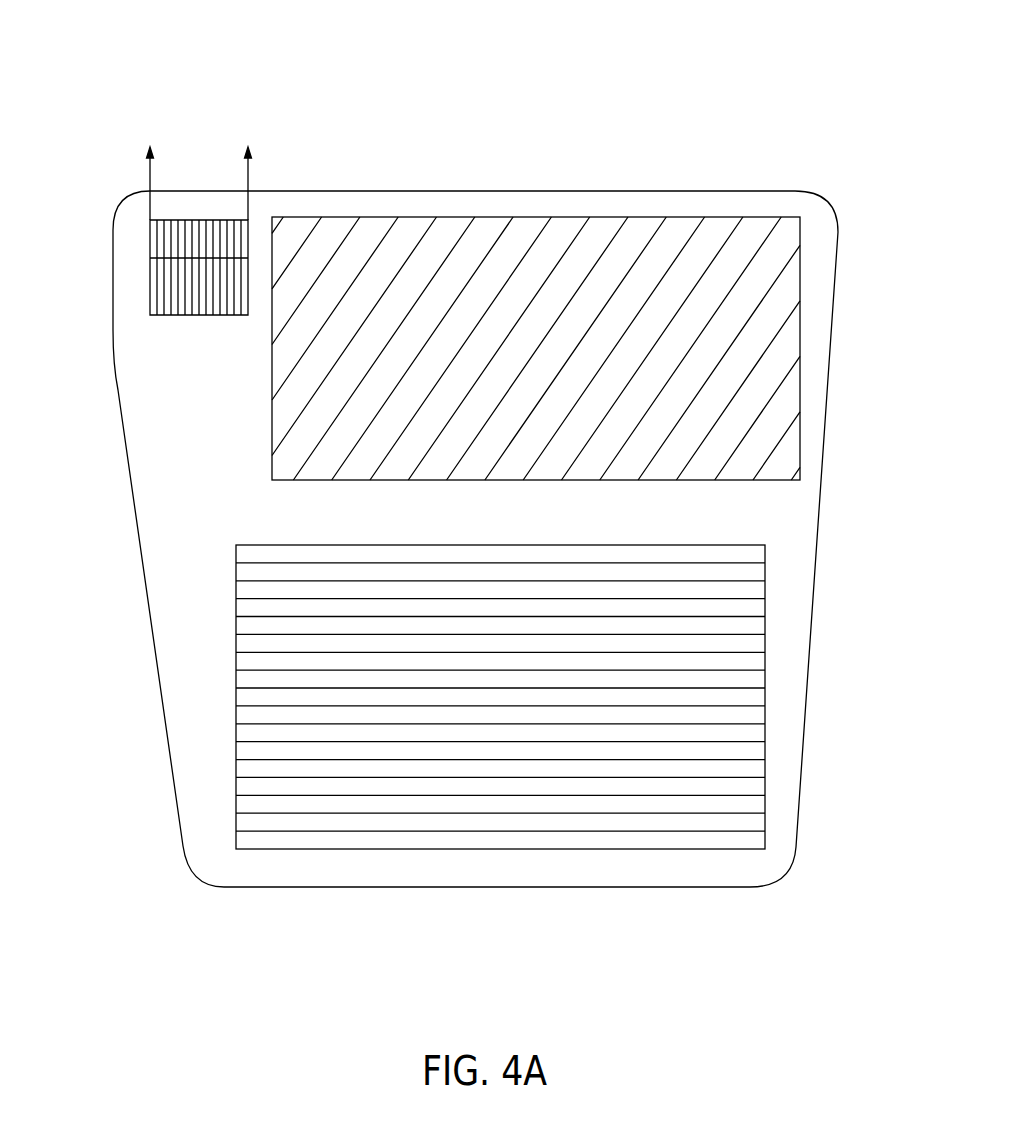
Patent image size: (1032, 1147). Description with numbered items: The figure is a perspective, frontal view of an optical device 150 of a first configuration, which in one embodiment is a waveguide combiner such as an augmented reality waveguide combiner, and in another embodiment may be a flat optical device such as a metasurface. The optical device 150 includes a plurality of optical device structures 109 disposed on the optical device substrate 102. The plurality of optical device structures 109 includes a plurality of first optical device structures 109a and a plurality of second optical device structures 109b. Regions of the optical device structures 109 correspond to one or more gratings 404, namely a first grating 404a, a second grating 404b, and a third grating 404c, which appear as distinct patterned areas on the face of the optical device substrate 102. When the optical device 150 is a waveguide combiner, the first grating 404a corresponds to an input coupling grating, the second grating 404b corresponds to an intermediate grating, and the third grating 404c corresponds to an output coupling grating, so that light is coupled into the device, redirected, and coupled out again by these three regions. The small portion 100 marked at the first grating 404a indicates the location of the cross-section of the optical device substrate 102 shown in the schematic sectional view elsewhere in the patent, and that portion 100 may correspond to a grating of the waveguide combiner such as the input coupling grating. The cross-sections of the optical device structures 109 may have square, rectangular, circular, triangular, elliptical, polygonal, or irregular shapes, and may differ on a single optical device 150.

The portion 100 is at (103, 170).
The optical device substrate 102 is at (562, 203).
The optical device structures 109 is at (207, 313).
The first optical device structures 109a is at (247, 313).
The second optical device structures 109b is at (162, 315).
The optical device 150 is at (798, 48).
The gratings 404 is at (762, 163).
The first grating 404a is at (250, 237).
The second grating 404b is at (458, 217).
The third grating 404c is at (655, 545).